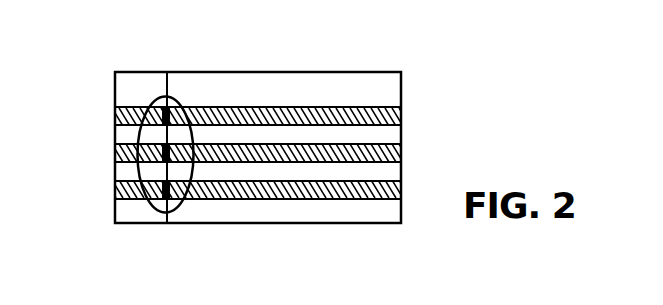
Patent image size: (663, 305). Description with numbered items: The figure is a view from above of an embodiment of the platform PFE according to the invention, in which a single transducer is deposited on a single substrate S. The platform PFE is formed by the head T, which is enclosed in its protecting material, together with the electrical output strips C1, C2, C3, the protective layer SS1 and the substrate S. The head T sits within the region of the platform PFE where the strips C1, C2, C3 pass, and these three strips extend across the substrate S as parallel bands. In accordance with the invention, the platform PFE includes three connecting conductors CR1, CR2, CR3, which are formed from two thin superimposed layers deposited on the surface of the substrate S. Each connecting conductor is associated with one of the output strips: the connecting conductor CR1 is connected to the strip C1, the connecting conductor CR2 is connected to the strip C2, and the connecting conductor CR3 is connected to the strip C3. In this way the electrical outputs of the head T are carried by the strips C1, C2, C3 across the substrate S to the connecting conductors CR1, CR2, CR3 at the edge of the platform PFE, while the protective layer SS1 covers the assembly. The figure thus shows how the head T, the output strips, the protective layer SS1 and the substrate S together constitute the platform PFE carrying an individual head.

The substrate S is at (333, 72).
The protective layer SS1 is at (123, 82).
The head T is at (176, 102).
The electrical output strip C1 is at (116, 112).
The electrical output strip C2 is at (116, 148).
The electrical output strip C3 is at (116, 186).
The connecting conductor CR1 is at (392, 117).
The connecting conductor CR2 is at (392, 155).
The connecting conductor CR3 is at (392, 192).
The platform PFE is at (313, 223).